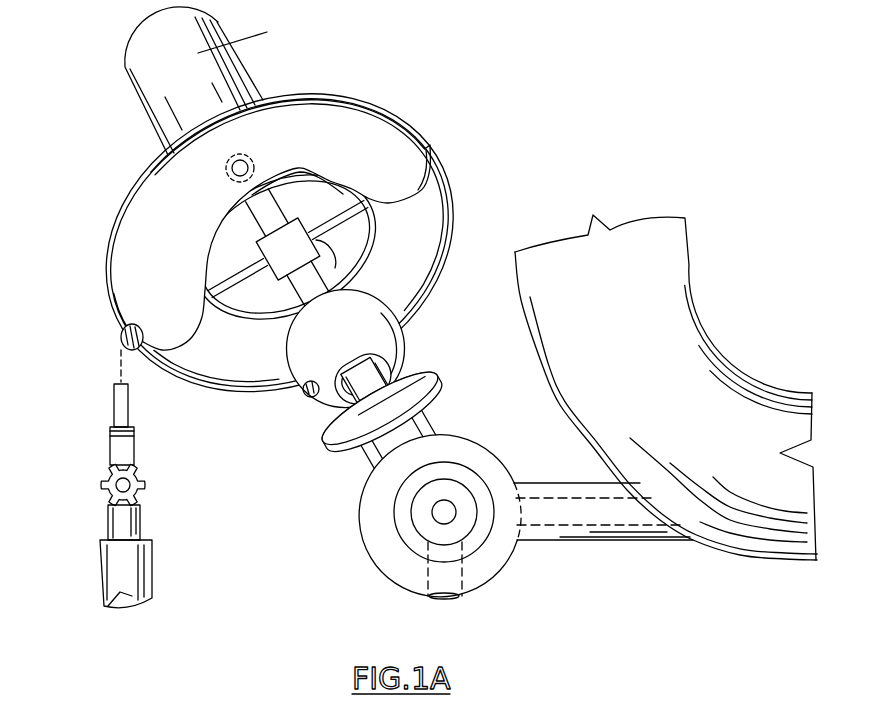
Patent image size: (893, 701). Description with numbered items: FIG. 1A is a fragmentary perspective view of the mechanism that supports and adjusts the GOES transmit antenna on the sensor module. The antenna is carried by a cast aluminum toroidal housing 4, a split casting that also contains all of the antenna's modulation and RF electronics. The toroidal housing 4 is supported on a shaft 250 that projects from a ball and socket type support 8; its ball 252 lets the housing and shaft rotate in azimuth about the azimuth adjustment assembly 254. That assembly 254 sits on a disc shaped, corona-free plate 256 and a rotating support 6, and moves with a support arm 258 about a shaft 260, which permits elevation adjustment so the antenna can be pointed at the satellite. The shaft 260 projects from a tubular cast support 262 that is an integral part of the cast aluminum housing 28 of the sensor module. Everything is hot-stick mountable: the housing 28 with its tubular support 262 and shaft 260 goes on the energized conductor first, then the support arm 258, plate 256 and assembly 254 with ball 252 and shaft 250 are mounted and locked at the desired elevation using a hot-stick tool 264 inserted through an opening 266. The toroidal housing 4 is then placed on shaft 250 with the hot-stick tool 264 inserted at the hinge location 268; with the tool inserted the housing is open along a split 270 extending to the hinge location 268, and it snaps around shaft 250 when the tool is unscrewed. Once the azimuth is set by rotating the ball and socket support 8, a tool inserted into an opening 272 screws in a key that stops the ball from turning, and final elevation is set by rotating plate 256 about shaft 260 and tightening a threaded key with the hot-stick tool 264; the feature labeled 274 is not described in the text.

The cast aluminum toroidal housing 4 is at (354, 113).
The rotating support 6 is at (518, 470).
The ball and socket type support 8 is at (280, 362).
The cast aluminum housing 28 is at (652, 347).
The shaft 250 is at (305, 216).
The ball 252 is at (408, 325).
The azimuth adjustment assembly 254 is at (392, 366).
The disc shaped corona-free plate 256 is at (442, 380).
The support arm 258 is at (364, 463).
The shaft 260 is at (448, 508).
The tubular cast support 262 is at (606, 535).
The hot-stick tool 264 is at (98, 560).
The opening 266 is at (446, 611).
The hinge location 268 is at (120, 328).
The split 270 is at (432, 163).
The opening 272 is at (307, 397).
The hidden passage 274 is at (449, 579).